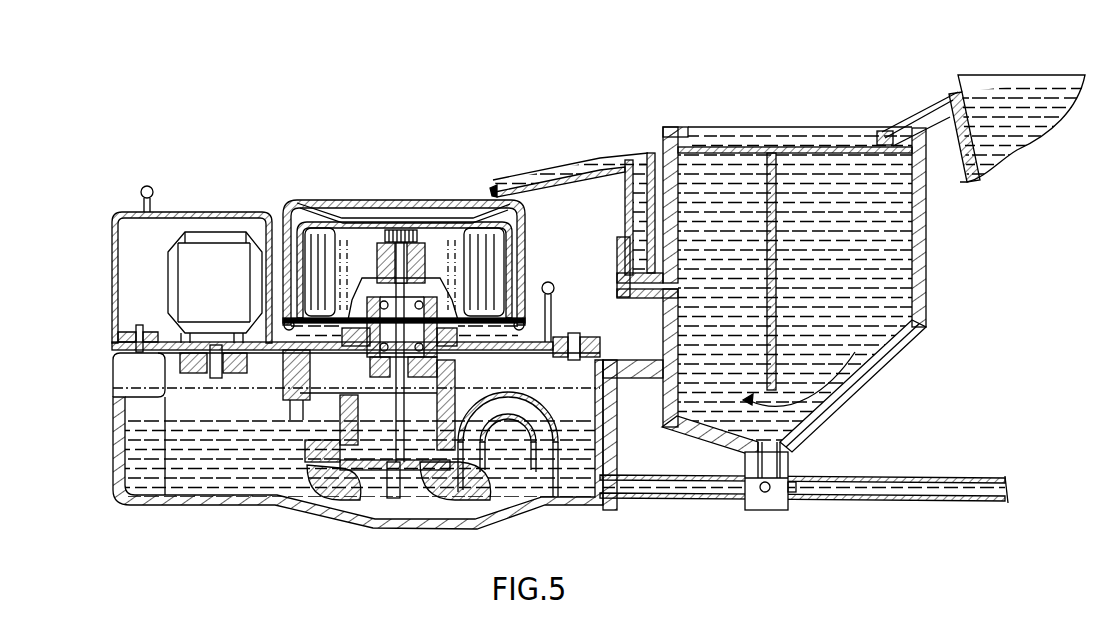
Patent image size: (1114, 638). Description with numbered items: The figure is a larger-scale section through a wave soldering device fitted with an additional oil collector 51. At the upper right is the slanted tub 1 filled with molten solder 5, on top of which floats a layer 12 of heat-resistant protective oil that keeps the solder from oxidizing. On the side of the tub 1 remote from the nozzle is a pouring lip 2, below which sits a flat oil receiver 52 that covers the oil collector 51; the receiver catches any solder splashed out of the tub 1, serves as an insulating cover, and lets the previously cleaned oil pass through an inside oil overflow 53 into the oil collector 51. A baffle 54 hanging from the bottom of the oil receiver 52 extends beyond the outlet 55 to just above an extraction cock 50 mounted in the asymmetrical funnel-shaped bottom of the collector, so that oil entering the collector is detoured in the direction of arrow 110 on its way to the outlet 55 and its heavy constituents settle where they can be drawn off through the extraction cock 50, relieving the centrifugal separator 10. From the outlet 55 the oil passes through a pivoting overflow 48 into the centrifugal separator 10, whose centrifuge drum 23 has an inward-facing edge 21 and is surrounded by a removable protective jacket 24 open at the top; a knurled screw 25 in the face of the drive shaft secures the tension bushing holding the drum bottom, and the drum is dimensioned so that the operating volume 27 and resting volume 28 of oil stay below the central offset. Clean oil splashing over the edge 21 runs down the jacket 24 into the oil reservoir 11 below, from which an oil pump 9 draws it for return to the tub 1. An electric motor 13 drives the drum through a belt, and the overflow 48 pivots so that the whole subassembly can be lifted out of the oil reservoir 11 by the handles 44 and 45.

The slanted tub 1 is at (968, 165).
The pouring lip 2 is at (927, 107).
The molten solder 5 is at (1063, 127).
The oil pump 9 is at (920, 503).
The centrifugal separator 10 is at (340, 190).
The oil reservoir 11 is at (167, 503).
The layer of protective oil 12 is at (1035, 123).
The electric motor 13 is at (180, 268).
The inward-facing edge 21 is at (296, 212).
The centrifuge drum 23 is at (513, 240).
The protective jacket 24 is at (378, 230).
The knurled screw 25 is at (400, 230).
The operating volume of oil 27 is at (330, 257).
The resting volume of oil 28 is at (338, 268).
The handle 44 is at (154, 191).
The handle 45 is at (548, 282).
The pivoting overflow 48 is at (540, 183).
The extraction cock 50 is at (772, 510).
The oil collector 51 is at (821, 286).
The flat oil receiver 52 is at (775, 145).
The inside oil overflow 53 is at (880, 140).
The baffle 54 is at (777, 241).
The outlet 55 is at (636, 300).
The arrow 110 is at (849, 350).